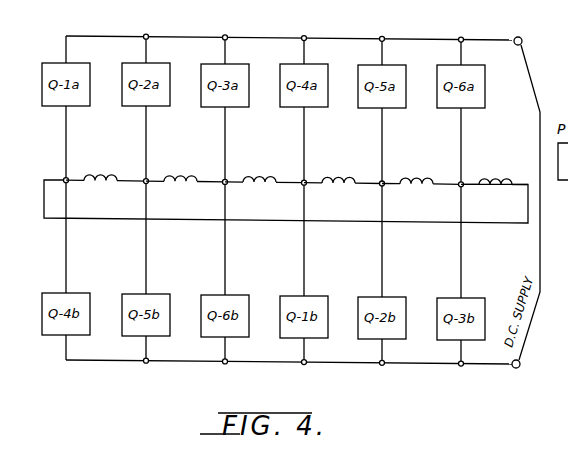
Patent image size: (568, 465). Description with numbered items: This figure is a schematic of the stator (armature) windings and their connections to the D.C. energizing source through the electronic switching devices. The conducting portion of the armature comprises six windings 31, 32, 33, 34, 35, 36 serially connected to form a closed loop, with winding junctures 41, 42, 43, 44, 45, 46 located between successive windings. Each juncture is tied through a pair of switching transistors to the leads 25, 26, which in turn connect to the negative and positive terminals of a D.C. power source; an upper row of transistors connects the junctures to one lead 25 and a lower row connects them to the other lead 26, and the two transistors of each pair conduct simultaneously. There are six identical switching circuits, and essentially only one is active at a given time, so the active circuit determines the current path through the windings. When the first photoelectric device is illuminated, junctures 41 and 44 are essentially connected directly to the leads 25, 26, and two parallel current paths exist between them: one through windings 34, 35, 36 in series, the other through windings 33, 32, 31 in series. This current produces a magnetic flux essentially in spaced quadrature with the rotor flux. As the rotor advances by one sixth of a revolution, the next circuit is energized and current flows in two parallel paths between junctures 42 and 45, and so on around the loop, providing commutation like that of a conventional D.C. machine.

The lead 25 is at (484, 41).
The lead 26 is at (477, 371).
The winding 31 is at (110, 175).
The winding 32 is at (190, 176).
The winding 33 is at (259, 178).
The winding 34 is at (336, 178).
The winding 35 is at (415, 178).
The winding 36 is at (498, 181).
The winding juncture 41 is at (64, 178).
The winding juncture 42 is at (150, 177).
The winding juncture 43 is at (229, 179).
The winding juncture 44 is at (308, 180).
The winding juncture 45 is at (386, 181).
The winding juncture 46 is at (464, 182).